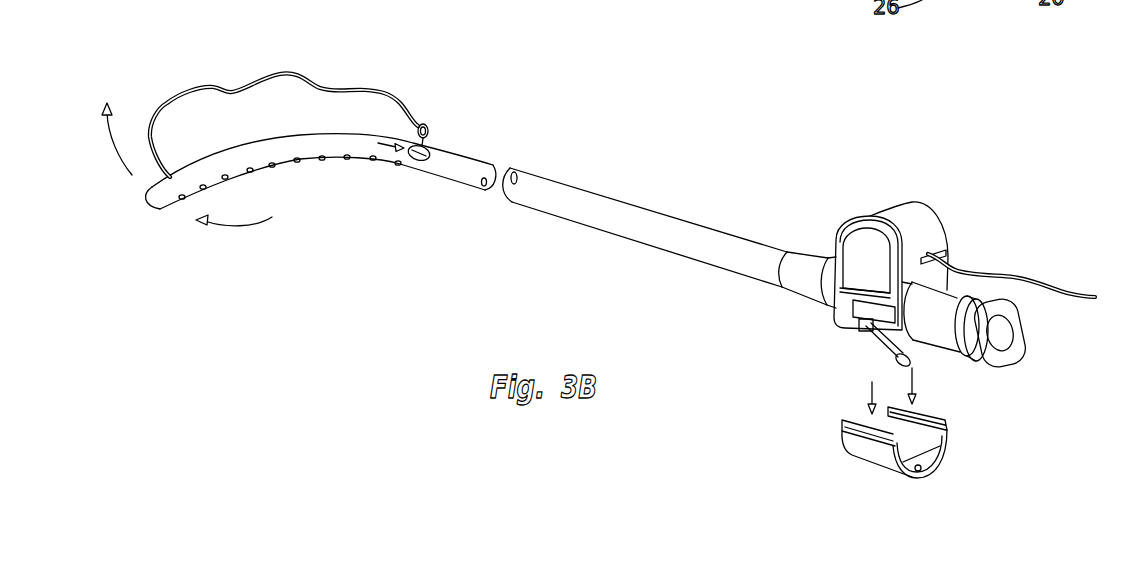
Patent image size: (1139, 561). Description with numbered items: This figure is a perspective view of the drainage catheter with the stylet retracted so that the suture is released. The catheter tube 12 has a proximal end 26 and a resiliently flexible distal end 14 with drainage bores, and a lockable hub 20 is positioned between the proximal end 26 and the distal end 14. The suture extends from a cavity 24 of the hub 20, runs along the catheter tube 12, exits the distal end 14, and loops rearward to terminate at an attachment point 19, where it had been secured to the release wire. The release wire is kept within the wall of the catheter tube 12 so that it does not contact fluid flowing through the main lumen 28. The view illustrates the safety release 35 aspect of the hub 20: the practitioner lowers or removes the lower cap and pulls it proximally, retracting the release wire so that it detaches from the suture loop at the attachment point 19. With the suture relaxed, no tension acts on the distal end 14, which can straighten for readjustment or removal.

The catheter tube 12 is at (323, 145).
The resiliently flexible distal end 14 is at (129, 223).
The attachment point 19 is at (438, 103).
The lockable hub 20 is at (994, 198).
The cavity 24 is at (925, 255).
The proximal end 26 is at (926, 427).
The lumen 28 is at (997, 338).
The securement member 35 is at (913, 363).